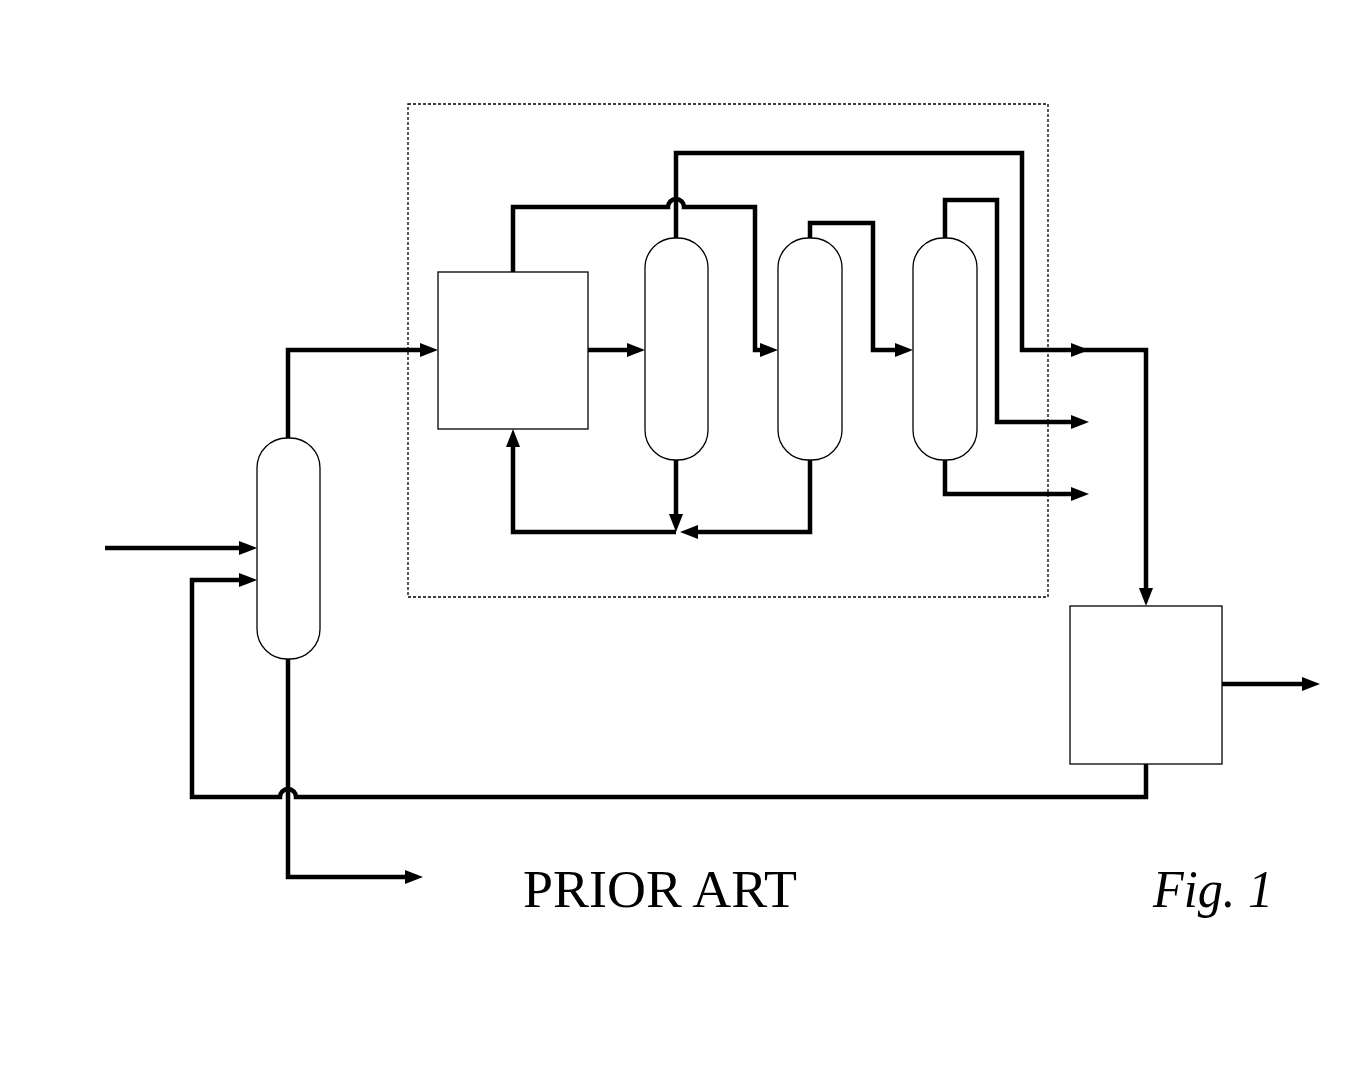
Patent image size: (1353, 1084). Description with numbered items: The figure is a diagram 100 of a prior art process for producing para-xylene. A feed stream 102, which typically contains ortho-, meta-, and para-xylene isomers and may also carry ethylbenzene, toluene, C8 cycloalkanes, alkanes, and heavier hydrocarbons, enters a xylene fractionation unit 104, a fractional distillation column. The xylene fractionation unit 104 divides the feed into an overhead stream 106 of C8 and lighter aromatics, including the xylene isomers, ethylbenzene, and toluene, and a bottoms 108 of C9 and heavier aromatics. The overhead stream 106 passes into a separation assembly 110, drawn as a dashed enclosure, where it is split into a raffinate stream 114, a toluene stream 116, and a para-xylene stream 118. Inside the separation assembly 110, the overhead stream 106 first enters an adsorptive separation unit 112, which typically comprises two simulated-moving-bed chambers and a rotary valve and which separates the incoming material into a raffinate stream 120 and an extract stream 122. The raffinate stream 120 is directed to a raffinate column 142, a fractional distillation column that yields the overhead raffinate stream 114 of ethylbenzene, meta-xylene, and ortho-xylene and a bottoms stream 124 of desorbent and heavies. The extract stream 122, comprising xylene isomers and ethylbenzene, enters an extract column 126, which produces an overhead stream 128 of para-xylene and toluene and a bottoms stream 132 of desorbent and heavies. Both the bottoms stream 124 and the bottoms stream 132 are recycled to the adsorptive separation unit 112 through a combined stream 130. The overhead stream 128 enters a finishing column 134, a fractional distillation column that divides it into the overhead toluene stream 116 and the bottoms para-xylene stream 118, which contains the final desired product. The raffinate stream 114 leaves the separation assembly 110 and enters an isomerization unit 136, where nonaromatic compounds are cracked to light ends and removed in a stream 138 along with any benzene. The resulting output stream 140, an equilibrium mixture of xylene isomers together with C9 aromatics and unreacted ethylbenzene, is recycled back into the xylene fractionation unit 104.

The diagram 100 is at (167, 101).
The feed stream 102 is at (160, 546).
The xylene fractionation unit 104 is at (273, 559).
The overhead stream 106 is at (350, 348).
The bottoms 108 is at (386, 879).
The separation assembly 110 is at (403, 219).
The adsorptive separation unit 112 is at (498, 361).
The raffinate stream 114 is at (1022, 282).
The toluene stream 116 is at (1025, 421).
The para-xylene stream 118 is at (965, 493).
The raffinate stream 120 is at (622, 346).
The extract stream 122 is at (604, 205).
The bottoms stream 124 is at (674, 485).
The extract column 126 is at (795, 361).
The overhead stream 128 is at (838, 222).
The combined stream 130 is at (598, 535).
The bottoms stream 132 is at (778, 530).
The finishing column 134 is at (930, 361).
The isomerization unit 136 is at (1131, 694).
The stream 138 is at (1256, 682).
The output stream 140 is at (840, 796).
The raffinate column 142 is at (661, 361).